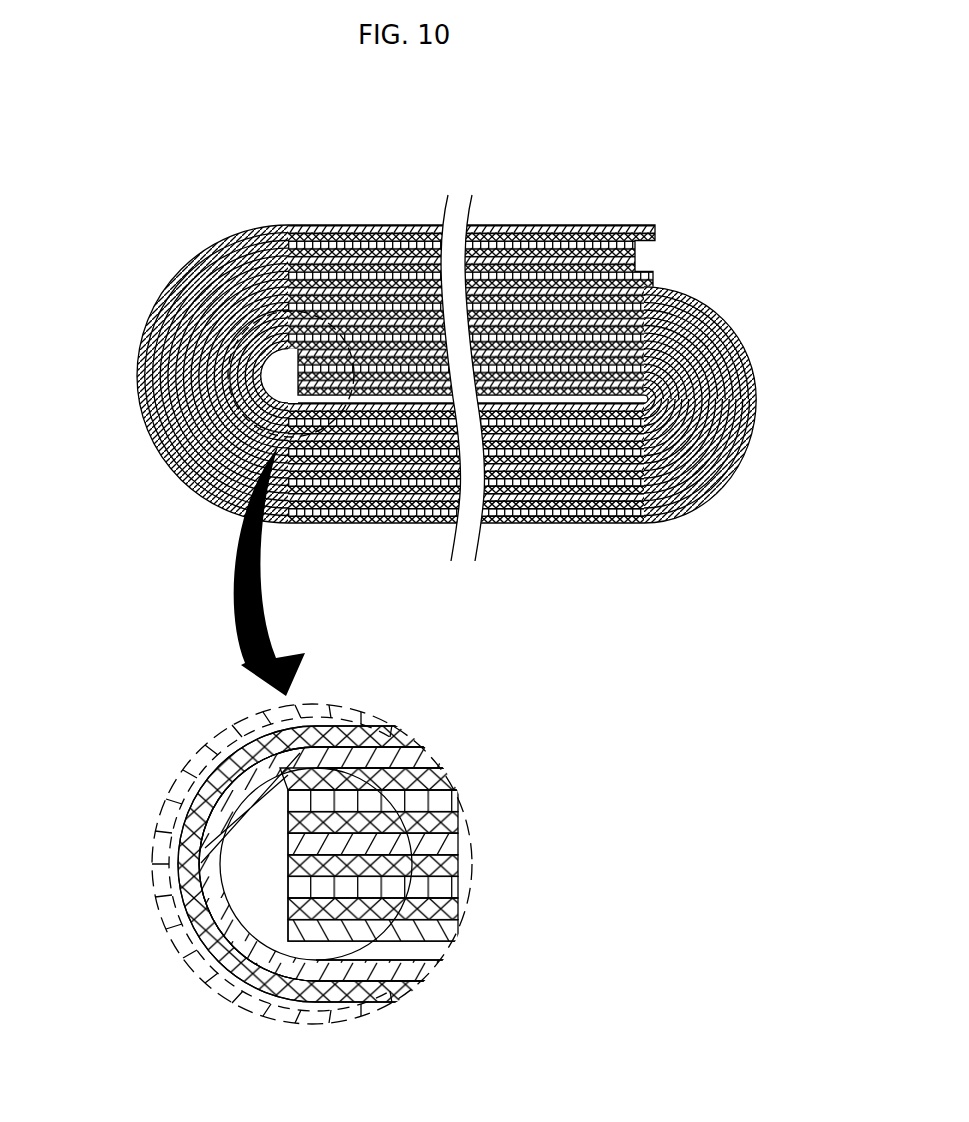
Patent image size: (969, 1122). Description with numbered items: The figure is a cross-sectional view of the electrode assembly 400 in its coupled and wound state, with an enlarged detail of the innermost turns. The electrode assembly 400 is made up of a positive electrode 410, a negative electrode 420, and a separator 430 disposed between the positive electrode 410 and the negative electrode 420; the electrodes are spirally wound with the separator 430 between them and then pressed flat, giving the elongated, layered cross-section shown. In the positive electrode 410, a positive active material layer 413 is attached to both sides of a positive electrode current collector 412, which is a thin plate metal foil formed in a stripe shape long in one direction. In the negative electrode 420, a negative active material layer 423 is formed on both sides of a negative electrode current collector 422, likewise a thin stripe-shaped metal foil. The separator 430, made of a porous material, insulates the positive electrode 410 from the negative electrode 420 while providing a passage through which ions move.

The electrode assembly 400 is at (547, 207).
The positive electrode 410 is at (437, 744).
The positive electrode current collector 412 is at (680, 490).
The positive active material layer 413 is at (617, 488).
The negative electrode 420 is at (467, 700).
The negative electrode current collector 422 is at (501, 487).
The negative active material layer 423 is at (582, 490).
The separator 430 is at (675, 488).